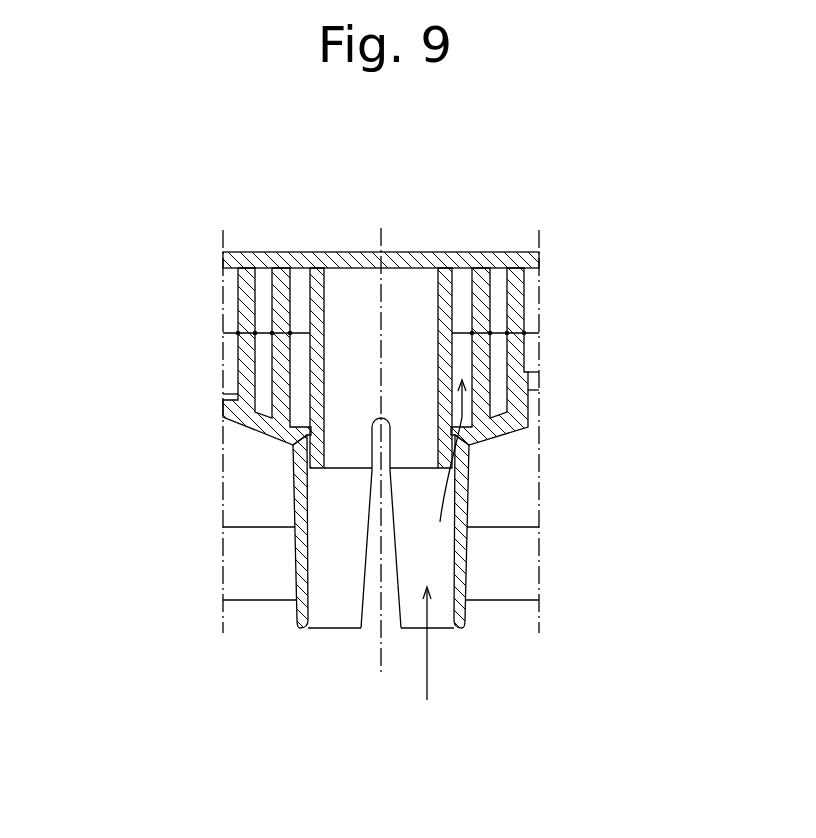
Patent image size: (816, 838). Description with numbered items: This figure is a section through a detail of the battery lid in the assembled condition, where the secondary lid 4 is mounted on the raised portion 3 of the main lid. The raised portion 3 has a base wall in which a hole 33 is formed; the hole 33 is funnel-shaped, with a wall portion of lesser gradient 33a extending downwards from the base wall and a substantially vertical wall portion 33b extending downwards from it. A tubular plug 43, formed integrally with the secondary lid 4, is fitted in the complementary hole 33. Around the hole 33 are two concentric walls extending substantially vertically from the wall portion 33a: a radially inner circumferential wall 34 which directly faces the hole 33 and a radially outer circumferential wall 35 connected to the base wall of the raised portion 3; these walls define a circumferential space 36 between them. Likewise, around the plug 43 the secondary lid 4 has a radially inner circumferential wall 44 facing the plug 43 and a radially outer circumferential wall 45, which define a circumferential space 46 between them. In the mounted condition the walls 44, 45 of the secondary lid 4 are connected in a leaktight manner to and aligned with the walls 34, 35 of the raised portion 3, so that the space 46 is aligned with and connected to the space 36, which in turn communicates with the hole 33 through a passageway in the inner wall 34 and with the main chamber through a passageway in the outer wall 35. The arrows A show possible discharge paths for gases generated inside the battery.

The raised portion 3 is at (190, 372).
The secondary lid 4 is at (293, 240).
The hole 33 is at (308, 588).
The wall portion of lesser gradient 33a is at (264, 440).
The substantially vertical wall portion 33b is at (466, 556).
The radially inner circumferential wall 34 is at (210, 390).
The radially outer circumferential wall 35 is at (240, 353).
The circumferential space 36 is at (497, 357).
The tubular plug 43 is at (443, 287).
The radially inner circumferential wall 44 is at (235, 312).
The radially outer circumferential wall 45 is at (270, 283).
The circumferential space 46 is at (497, 292).
The arrows A is at (462, 410).